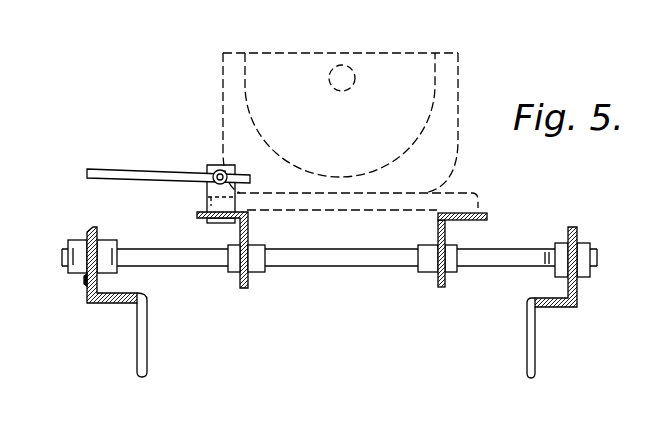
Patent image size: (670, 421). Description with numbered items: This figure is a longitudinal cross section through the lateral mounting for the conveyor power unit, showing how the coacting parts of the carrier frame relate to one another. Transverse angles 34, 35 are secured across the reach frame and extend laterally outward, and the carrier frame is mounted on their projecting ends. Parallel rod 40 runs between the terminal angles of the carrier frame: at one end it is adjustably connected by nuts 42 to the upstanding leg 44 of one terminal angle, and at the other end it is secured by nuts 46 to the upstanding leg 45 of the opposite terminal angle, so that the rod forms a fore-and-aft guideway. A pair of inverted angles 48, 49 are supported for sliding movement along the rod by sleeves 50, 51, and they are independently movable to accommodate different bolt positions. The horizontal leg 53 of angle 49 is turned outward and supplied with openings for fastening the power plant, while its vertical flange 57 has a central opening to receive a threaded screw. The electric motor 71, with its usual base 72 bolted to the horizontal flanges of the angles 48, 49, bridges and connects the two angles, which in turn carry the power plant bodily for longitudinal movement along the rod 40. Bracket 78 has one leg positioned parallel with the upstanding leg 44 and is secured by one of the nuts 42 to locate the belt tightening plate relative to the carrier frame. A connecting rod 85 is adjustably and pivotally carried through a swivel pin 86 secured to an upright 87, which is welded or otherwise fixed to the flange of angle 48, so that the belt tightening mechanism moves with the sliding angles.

The transverse angle 34 is at (116, 302).
The transverse angle 35 is at (580, 302).
The rod 40 is at (335, 263).
The nut 42 is at (88, 233).
The upstanding leg 44 is at (96, 290).
The upstanding leg 45 is at (577, 285).
The nut 46 is at (573, 243).
The inverted angle 48 is at (251, 276).
The inverted angle 49 is at (446, 275).
The sleeve 50 is at (261, 250).
The sleeve 51 is at (427, 273).
The horizontal leg 53 is at (473, 212).
The vertical flange 57 is at (446, 233).
The electric motor 71 is at (387, 81).
The base 72 is at (402, 195).
The bracket 78 is at (86, 281).
The connecting rod 85 is at (133, 171).
The swivel pin 86 is at (217, 170).
The upright 87 is at (215, 200).